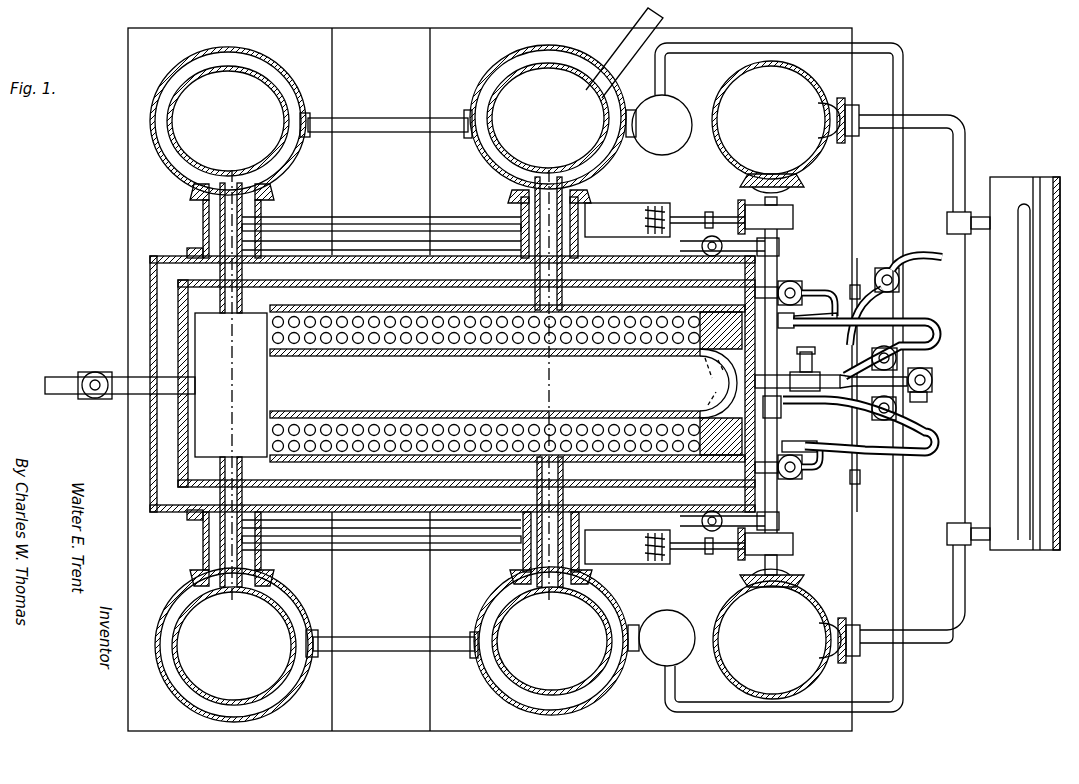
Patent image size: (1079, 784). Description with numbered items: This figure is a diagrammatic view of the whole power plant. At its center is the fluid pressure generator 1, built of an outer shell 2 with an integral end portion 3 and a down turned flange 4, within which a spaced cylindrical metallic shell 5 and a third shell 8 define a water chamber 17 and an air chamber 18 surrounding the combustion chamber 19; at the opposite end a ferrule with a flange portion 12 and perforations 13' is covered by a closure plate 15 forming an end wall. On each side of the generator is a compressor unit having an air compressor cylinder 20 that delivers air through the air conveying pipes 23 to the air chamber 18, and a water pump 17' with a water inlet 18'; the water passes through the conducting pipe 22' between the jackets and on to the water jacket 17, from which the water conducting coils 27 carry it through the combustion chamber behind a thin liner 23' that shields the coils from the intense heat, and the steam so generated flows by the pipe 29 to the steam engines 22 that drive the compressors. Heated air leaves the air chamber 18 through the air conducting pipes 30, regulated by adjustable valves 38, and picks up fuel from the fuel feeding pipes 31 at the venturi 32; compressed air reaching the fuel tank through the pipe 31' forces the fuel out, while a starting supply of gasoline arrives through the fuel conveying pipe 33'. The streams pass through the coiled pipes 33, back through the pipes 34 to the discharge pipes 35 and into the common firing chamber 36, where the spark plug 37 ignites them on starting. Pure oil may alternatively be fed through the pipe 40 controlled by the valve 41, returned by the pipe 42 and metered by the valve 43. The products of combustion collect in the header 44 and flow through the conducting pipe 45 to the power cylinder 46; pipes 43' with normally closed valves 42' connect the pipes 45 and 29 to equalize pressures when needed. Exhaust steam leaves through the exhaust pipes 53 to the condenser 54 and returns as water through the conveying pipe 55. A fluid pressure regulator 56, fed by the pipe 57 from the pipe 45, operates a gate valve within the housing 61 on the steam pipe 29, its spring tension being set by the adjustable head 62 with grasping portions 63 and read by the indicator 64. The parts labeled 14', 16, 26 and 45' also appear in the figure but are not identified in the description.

The fluid pressure generator 1 is at (150, 262).
The outer shell 2 is at (338, 255).
The integral end portion 3 is at (150, 332).
The down turned flange 4 is at (207, 217).
The cylindrical metallic shell 5 is at (348, 280).
The third shell 8 is at (365, 305).
The flange portion 12 is at (768, 286).
The perforations 13' is at (712, 391).
The bent pipe 14' is at (818, 479).
The closure plate 15 is at (830, 298).
The valve 16 is at (798, 284).
The water chamber 17 is at (462, 272).
The water pump 17' is at (660, 380).
The air chamber 18 is at (461, 296).
The water inlet 18' is at (779, 377).
The combustion chamber 19 is at (485, 383).
The air compressor cylinder 20 is at (545, 80).
The steam engine 22 is at (786, 381).
The conducting pipe 22' is at (389, 383).
The air conveying pipes 23 is at (581, 396).
The liner 23' is at (495, 397).
The fitting 26 is at (784, 407).
The water conducting coils 27 is at (486, 395).
The steam conveying pipe 29 is at (830, 500).
The air conducting pipes 30 is at (858, 265).
The fuel feeding pipes 31 is at (866, 365).
The pipe 31' is at (624, 50).
The venturi 32 is at (858, 284).
The coiled pipes 33 is at (681, 379).
The fuel conveying pipe 33' is at (869, 523).
The pipes 34 is at (700, 372).
The discharge pipes 35 is at (915, 318).
The firing chamber 36 is at (928, 370).
The spark plug 37 is at (883, 348).
The adjustable valves 38 is at (804, 312).
The pipe 40 is at (912, 262).
The valve 41 is at (898, 268).
The fuel feed pipe 42 is at (912, 406).
The valves 42' is at (729, 383).
The valve 43 is at (984, 372).
The pipes 43' is at (381, 386).
The header 44 is at (231, 385).
The conducting pipe 45 is at (230, 225).
The shaft pipe 45' is at (231, 539).
The cylinder 46 is at (303, 76).
The exhaust pipes 53 is at (962, 120).
The condenser 54 is at (1020, 185).
The conveying pipe 55 is at (950, 538).
The fluid pressure regulator 56 is at (665, 383).
The pipe 57 is at (366, 222).
The housing 61 is at (795, 214).
The adjustable head 62 is at (60, 377).
The grasping portions 63 is at (95, 372).
The indicator 64 is at (668, 204).